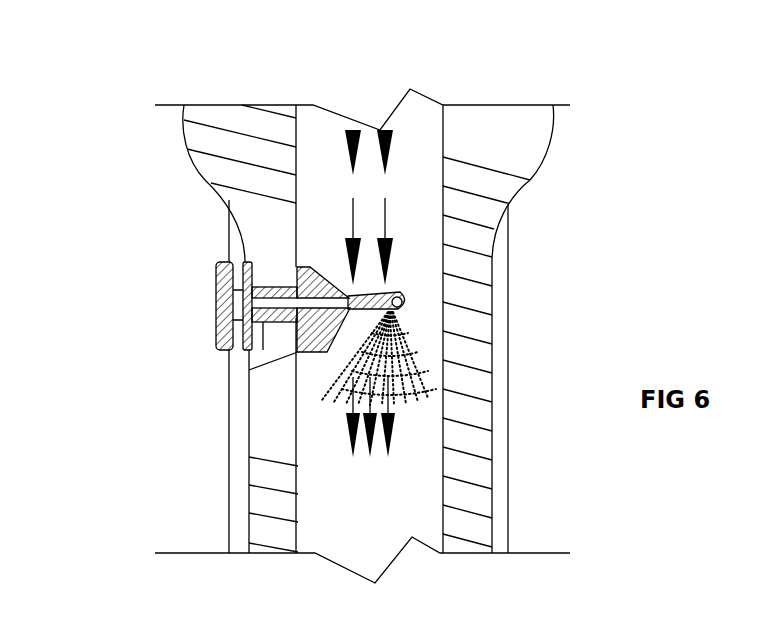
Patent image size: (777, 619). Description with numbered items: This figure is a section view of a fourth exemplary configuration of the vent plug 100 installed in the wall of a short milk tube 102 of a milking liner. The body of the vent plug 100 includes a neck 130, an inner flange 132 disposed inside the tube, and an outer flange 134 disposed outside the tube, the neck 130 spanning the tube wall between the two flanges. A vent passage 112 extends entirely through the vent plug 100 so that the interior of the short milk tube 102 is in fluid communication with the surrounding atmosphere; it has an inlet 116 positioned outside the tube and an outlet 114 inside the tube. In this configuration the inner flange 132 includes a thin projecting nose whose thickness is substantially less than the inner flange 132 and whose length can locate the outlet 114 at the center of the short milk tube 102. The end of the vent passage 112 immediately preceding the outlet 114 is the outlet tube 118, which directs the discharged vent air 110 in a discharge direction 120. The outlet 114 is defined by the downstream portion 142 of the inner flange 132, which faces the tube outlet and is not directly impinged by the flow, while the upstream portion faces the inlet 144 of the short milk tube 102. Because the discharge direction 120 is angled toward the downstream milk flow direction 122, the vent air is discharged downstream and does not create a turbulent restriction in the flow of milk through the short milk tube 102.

The vent plug 100 is at (200, 345).
The short milk tube 102 is at (468, 474).
The discharged vent air 110 is at (397, 330).
The vent passage 112 is at (272, 283).
The outlet 114 is at (347, 310).
The inlet 116 is at (238, 350).
The outlet tube 118 is at (385, 298).
The discharge direction 120 is at (393, 387).
The milk flow direction 122 is at (383, 217).
The neck 130 is at (277, 333).
The inner flange 132 is at (318, 268).
The outer flange 134 is at (215, 272).
The downstream portion 142 is at (343, 326).
The inlet of short milk tube 144 is at (418, 122).